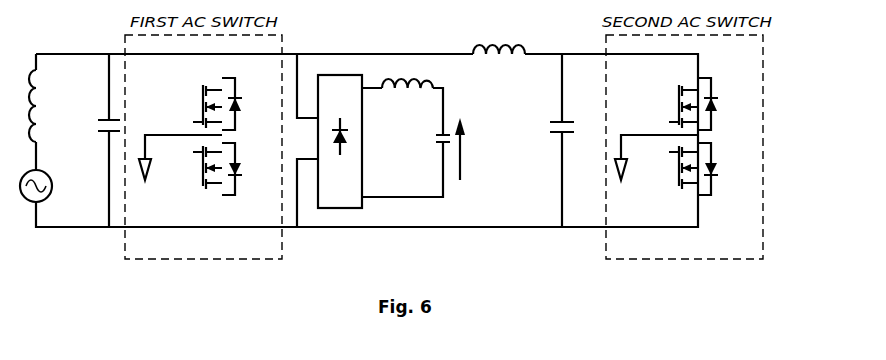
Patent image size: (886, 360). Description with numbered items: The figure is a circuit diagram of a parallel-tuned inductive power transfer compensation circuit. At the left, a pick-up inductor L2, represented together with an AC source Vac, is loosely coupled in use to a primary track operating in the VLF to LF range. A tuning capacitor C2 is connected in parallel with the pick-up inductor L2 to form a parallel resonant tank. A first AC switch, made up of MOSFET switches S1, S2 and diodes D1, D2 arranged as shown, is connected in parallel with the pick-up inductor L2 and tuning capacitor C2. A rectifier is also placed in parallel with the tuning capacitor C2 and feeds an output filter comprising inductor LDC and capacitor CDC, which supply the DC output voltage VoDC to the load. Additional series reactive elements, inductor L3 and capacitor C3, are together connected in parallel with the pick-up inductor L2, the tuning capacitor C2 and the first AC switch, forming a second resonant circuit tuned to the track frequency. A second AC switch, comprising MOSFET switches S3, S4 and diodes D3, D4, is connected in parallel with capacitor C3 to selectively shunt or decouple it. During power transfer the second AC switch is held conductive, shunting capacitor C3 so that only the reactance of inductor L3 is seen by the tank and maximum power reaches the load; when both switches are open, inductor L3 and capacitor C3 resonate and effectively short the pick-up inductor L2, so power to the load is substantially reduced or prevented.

The pick-up inductor L2 is at (42, 106).
The tuning capacitor C2 is at (96, 140).
The AC voltage source Vac is at (50, 186).
The MOSFET switch S1 is at (200, 106).
The diode D1 is at (245, 104).
The MOSFET switch S2 is at (200, 167).
The diode D2 is at (245, 169).
The output filter inductor LDC is at (407, 93).
The output filter capacitor CDC is at (429, 143).
The DC output voltage VoDC is at (474, 149).
The additional series inductor L3 is at (499, 64).
The additional capacitor C3 is at (546, 140).
The MOSFET switch S3 is at (675, 106).
The diode D3 is at (721, 104).
The MOSFET switch S4 is at (675, 167).
The diode D4 is at (721, 169).